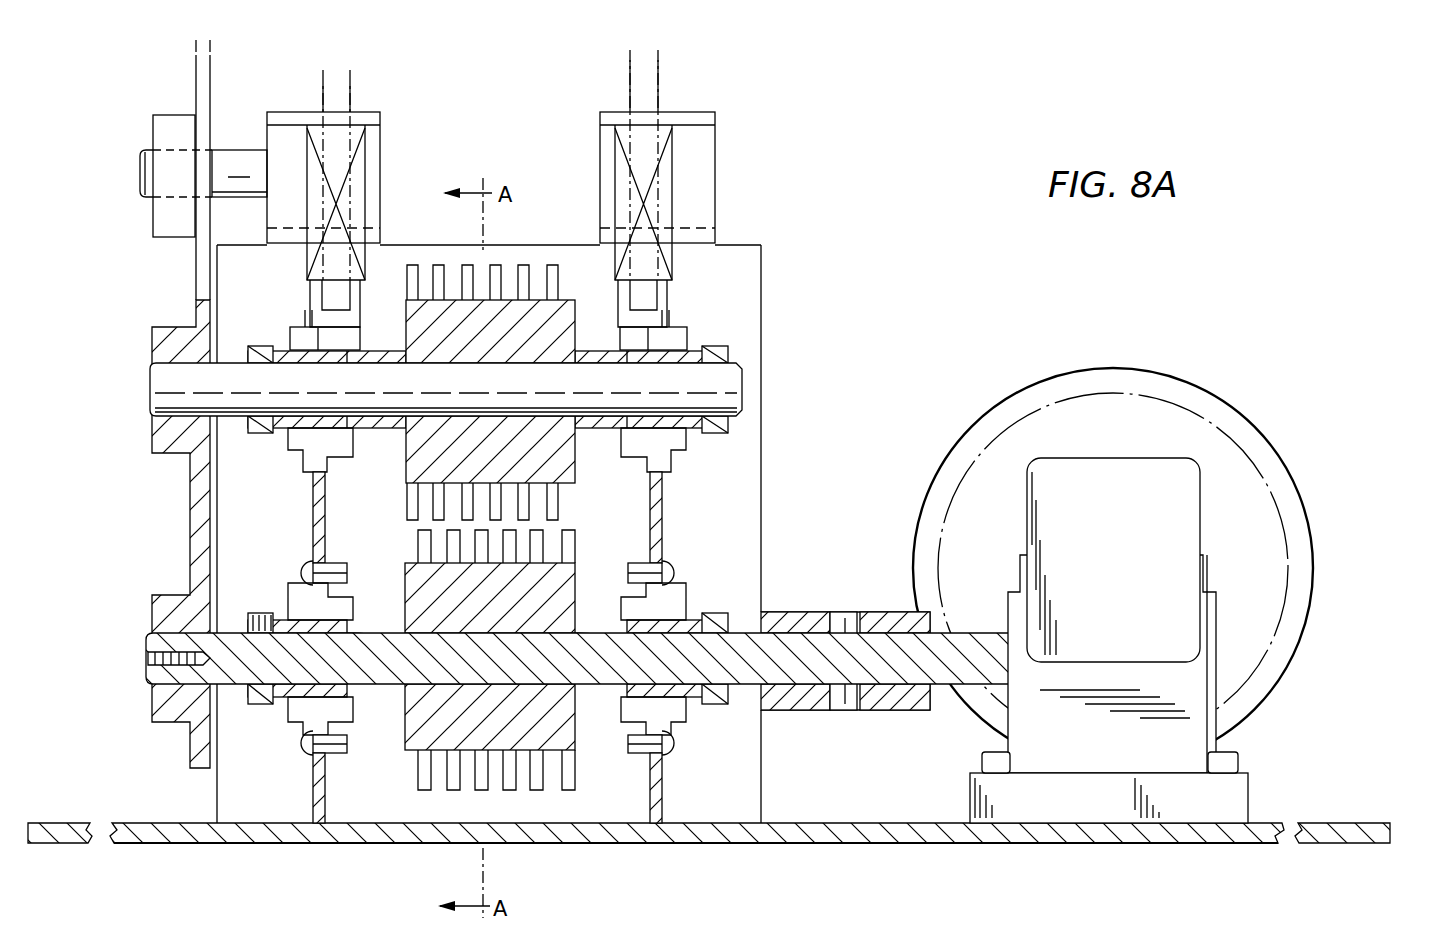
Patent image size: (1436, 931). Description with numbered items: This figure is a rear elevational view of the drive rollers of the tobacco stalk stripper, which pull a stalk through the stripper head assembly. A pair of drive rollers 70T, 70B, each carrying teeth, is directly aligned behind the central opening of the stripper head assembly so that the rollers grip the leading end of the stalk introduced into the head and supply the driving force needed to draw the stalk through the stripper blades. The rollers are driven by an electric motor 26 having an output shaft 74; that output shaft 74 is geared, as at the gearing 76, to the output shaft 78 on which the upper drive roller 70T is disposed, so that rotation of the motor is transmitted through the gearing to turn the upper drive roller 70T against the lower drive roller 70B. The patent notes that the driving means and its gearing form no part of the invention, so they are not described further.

The electric motor 26 is at (1265, 441).
The upper drive roller 70T is at (498, 267).
The lower drive roller 70B is at (576, 555).
The output shaft 74 is at (498, 672).
The gearing 76 is at (325, 531).
The output shaft 78 is at (506, 402).